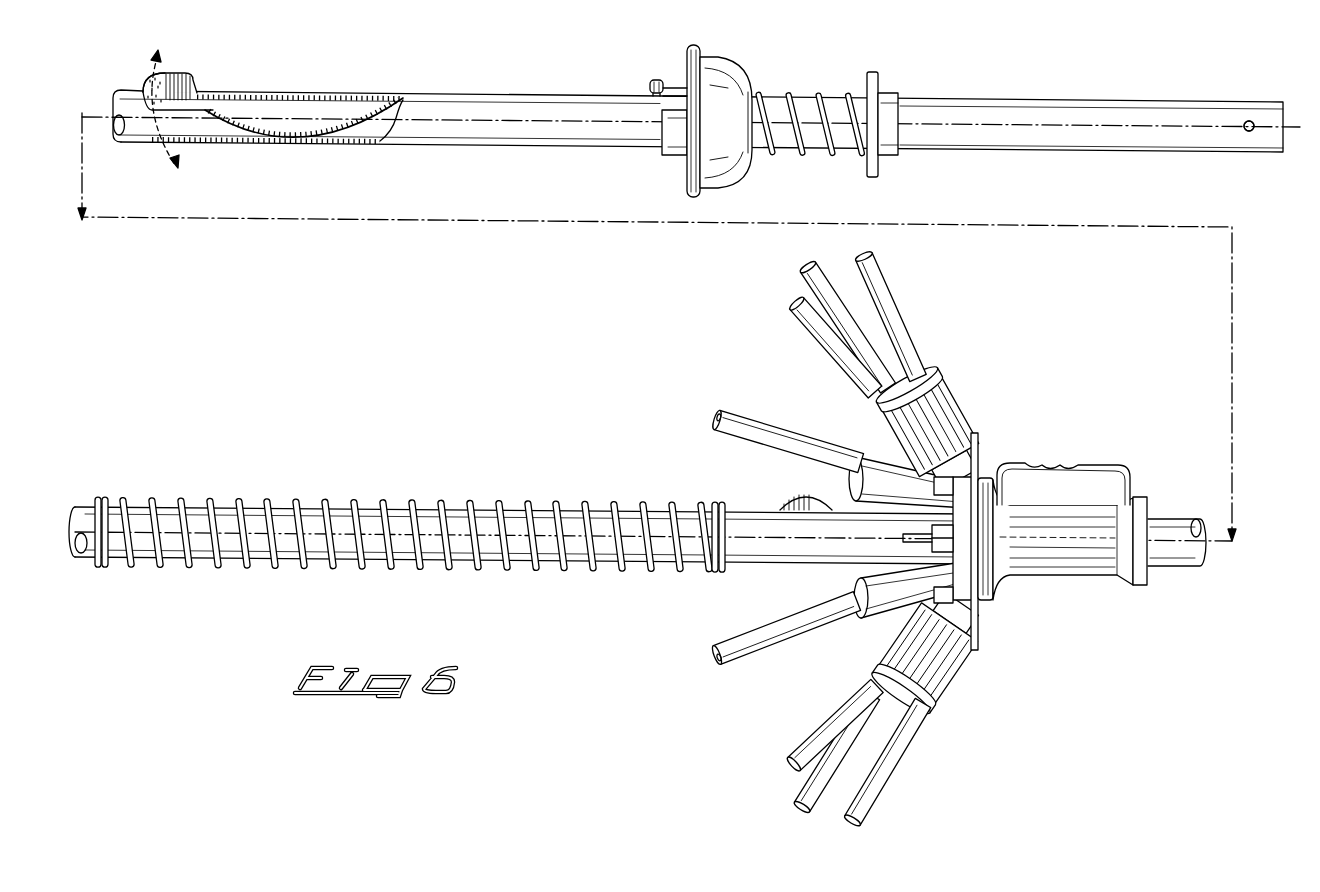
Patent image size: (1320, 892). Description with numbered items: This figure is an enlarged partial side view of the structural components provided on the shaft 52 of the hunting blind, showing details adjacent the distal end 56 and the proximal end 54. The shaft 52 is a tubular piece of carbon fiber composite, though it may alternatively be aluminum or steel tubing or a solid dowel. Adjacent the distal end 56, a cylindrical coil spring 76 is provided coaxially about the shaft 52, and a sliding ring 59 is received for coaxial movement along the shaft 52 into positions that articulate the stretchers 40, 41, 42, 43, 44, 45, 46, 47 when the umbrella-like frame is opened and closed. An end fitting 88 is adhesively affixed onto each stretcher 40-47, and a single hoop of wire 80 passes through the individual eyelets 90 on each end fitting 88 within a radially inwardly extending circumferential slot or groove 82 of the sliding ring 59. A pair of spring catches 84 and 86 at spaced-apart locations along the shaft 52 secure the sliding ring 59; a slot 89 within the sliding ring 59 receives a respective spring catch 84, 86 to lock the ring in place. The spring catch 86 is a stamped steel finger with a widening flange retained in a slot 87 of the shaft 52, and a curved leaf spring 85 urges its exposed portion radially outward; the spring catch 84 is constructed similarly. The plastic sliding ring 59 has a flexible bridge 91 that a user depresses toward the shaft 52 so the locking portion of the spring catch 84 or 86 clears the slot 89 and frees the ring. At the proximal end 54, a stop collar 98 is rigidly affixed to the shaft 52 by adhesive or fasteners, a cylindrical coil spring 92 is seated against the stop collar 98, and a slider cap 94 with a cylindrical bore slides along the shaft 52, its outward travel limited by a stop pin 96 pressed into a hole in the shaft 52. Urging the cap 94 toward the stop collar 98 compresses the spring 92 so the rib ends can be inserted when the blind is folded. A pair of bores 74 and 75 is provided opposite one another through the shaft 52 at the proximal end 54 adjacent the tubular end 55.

The stretcher 40 is at (808, 280).
The stretcher 41 is at (874, 279).
The stretcher 42 is at (808, 325).
The stretcher 43 is at (807, 750).
The stretcher 44 is at (870, 795).
The stretcher 45 is at (797, 805).
The stretcher 46 is at (752, 635).
The stretcher 47 is at (750, 423).
The shaft 52 is at (366, 92).
The proximal end 54 is at (670, 199).
The tubular end 55 is at (1292, 158).
The distal end 56 is at (101, 590).
The sliding ring 59 is at (997, 582).
The bore 74 is at (1249, 120).
The bore 75 is at (1200, 94).
The cylindrical coil spring 76 is at (327, 498).
The hoop of wire 80 is at (1085, 498).
The circumferential slot or groove 82 is at (973, 612).
The spring catch 84 is at (800, 497).
The curved leaf spring 85 is at (293, 133).
The spring catch 86 is at (182, 74).
The slot 87 is at (138, 86).
The end fitting 88 is at (916, 402).
The slot 89 is at (1082, 512).
The eyelet 90 is at (970, 445).
The flexible bridge 91 is at (1083, 465).
The cylindrical coil spring 92 is at (832, 156).
The slider cap 94 is at (723, 57).
The stop pin 96 is at (655, 78).
The stop collar 98 is at (886, 85).